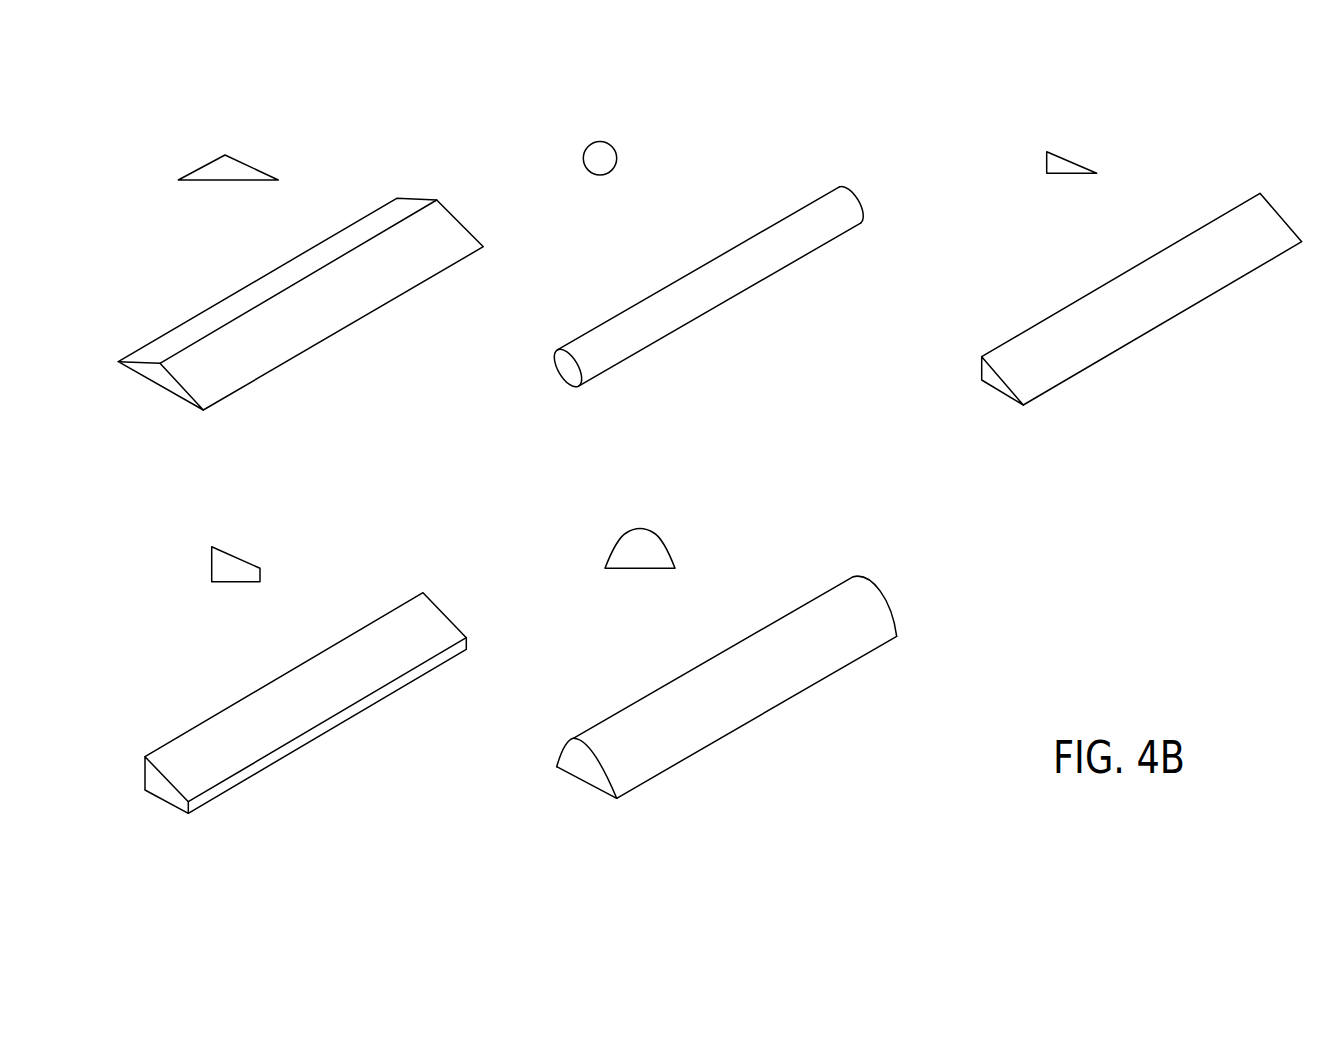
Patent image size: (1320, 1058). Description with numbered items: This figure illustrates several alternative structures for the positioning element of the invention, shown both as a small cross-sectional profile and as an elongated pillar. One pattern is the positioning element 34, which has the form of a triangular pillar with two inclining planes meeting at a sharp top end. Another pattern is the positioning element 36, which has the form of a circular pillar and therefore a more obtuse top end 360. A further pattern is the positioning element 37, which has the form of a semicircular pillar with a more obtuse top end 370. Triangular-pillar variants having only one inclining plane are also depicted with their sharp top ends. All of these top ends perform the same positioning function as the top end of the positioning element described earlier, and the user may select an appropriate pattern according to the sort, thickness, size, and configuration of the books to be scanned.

The positioning element 34 is at (350, 208).
The positioning element 36 is at (699, 191).
The obtuse top end 360 is at (600, 142).
The positioning element 37 is at (764, 594).
The obtuse top end 370 is at (638, 528).